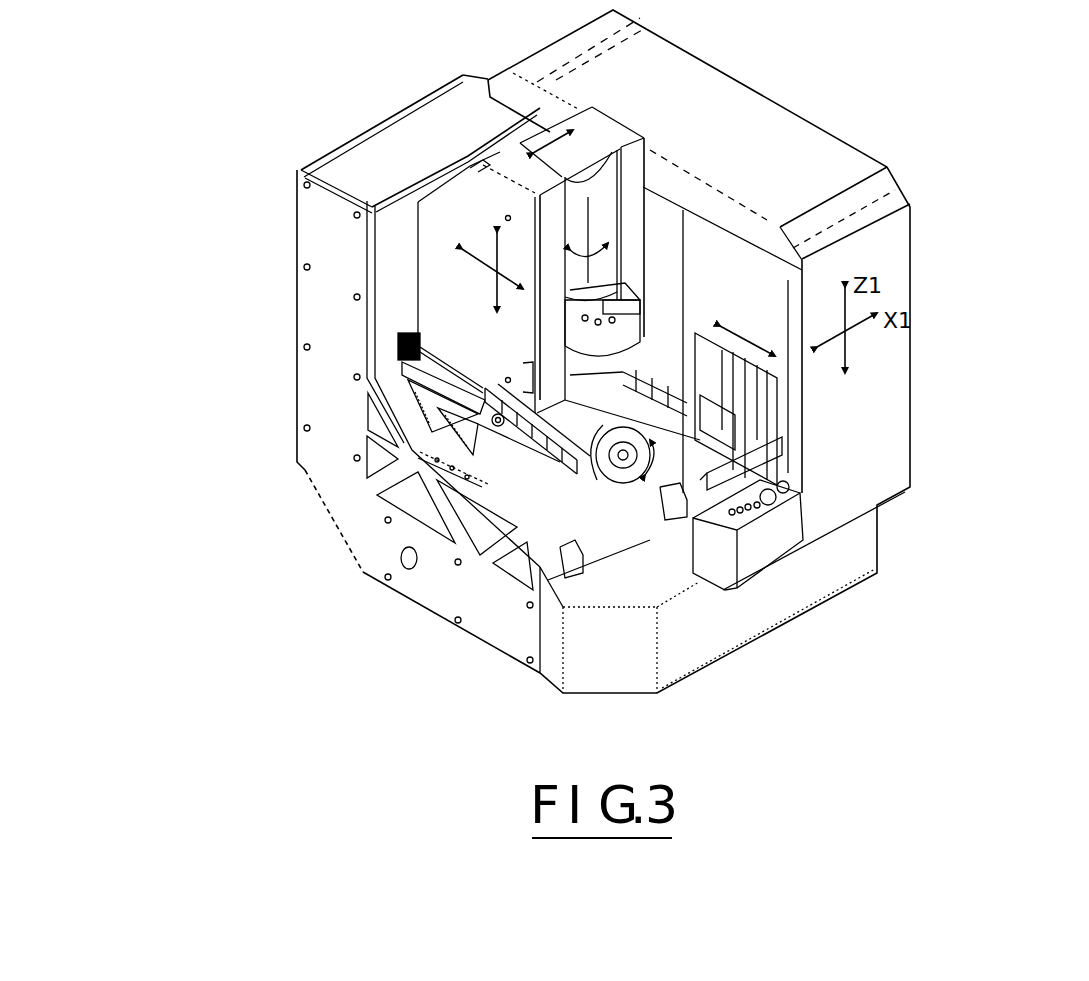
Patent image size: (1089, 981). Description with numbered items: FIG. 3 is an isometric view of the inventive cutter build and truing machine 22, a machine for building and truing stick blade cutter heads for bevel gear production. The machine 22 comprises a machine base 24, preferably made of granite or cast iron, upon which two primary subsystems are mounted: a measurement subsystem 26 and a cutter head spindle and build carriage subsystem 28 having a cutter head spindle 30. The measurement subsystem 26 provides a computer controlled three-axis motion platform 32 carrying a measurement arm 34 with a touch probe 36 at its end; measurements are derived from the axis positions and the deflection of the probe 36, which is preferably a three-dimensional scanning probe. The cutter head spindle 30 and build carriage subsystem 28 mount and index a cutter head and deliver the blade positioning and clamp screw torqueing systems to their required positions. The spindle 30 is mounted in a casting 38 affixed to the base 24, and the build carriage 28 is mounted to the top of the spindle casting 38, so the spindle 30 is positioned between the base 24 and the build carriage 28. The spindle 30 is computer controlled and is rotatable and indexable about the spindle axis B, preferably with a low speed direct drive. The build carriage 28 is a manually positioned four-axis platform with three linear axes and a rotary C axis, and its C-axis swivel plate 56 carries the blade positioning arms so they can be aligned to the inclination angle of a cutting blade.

The cutter build and truing machine 22 is at (968, 237).
The machine base 24 is at (745, 642).
The measurement subsystem 26 is at (793, 500).
The cutter head spindle and build carriage subsystem 28 is at (533, 320).
The cutter head spindle 30 is at (525, 550).
The motion platform 32 is at (760, 418).
The measurement arm 34 is at (775, 452).
The touch probe 36 is at (713, 508).
The casting 38 is at (595, 520).
The C-axis swivel plate 56 is at (646, 334).